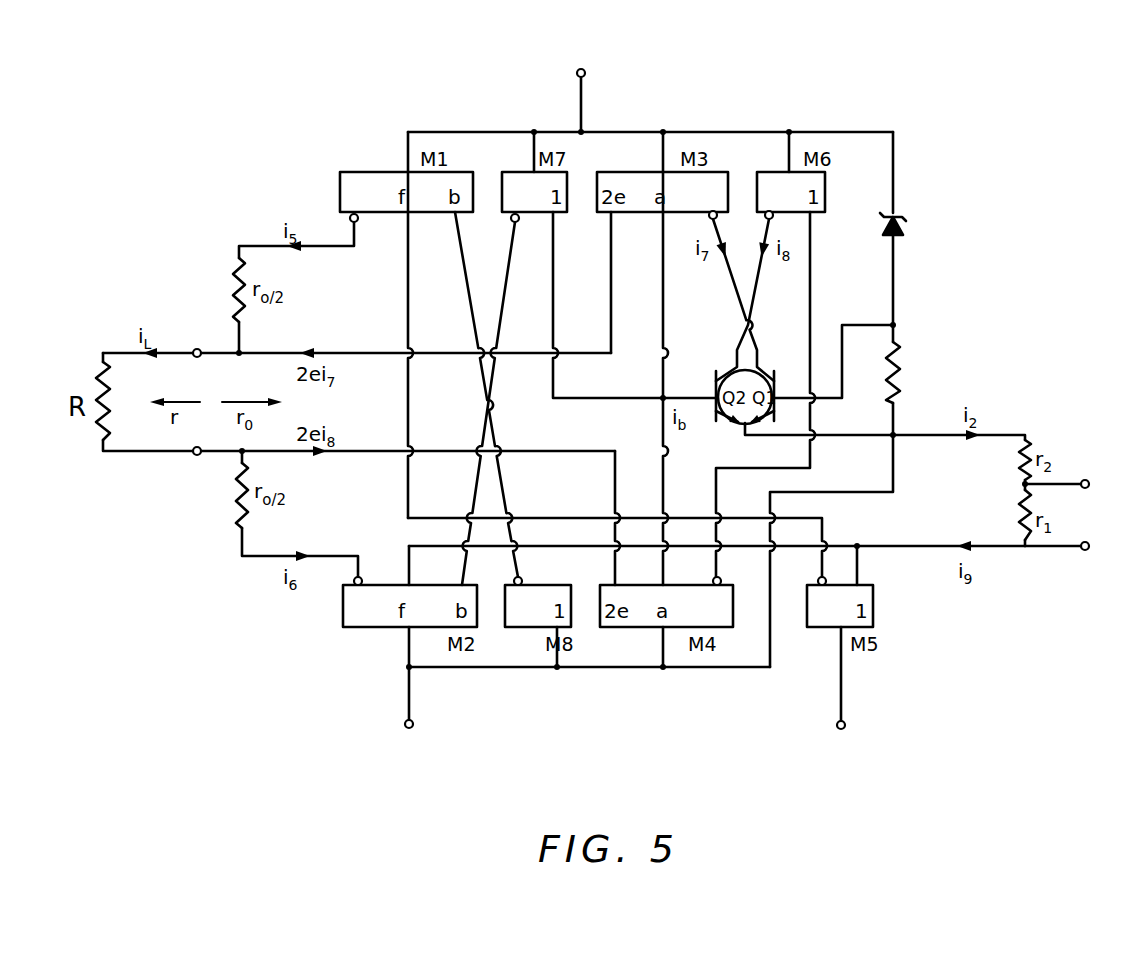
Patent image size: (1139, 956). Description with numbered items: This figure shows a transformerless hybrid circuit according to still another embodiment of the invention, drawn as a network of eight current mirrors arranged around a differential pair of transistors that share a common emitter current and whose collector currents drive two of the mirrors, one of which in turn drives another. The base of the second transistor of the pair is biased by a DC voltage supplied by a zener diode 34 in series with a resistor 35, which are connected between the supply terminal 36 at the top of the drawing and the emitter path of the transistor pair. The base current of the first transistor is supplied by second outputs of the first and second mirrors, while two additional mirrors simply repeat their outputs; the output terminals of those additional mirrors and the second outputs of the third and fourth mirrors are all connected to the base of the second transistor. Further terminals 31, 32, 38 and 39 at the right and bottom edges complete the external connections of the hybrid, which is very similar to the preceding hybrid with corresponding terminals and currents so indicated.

The input terminal 31 is at (1073, 548).
The input terminal 32 is at (1073, 486).
The zener diode 34 is at (908, 219).
The resistor 35 is at (905, 381).
The supply terminal 36 is at (586, 70).
The terminal 38 is at (845, 729).
The terminal 39 is at (405, 729).